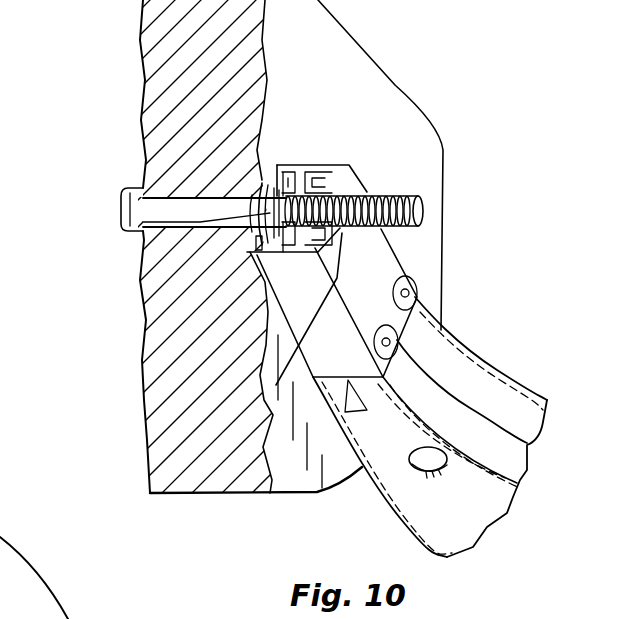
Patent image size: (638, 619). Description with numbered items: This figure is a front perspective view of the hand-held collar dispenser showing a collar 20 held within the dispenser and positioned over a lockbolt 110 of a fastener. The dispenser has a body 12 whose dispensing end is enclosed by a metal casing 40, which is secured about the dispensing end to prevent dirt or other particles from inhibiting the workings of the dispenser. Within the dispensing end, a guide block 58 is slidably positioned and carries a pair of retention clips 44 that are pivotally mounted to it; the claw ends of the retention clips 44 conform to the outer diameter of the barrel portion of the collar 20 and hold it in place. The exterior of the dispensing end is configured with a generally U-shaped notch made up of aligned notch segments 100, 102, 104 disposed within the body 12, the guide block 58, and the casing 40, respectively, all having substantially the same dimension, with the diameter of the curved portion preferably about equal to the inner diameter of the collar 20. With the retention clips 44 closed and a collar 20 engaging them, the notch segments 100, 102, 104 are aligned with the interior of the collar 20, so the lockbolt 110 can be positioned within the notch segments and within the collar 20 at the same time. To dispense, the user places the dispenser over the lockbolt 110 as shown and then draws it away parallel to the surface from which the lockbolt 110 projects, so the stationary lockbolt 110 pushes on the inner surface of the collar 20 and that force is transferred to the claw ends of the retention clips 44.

The collar 20 is at (267, 165).
The retention clip 44 is at (273, 167).
The body 12 is at (311, 165).
The guide block 58 is at (338, 167).
The lockbolt 110 is at (424, 211).
The casing 40 is at (382, 259).
The notch segment 100 is at (256, 247).
The notch segment 102 is at (277, 263).
The notch segment 104 is at (250, 400).